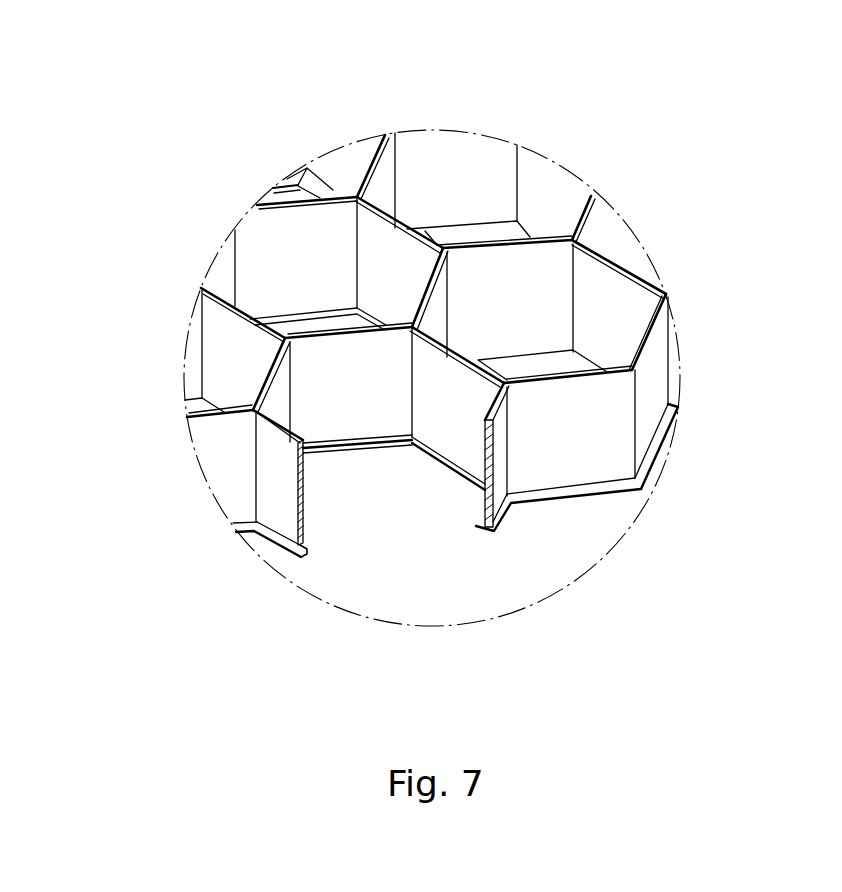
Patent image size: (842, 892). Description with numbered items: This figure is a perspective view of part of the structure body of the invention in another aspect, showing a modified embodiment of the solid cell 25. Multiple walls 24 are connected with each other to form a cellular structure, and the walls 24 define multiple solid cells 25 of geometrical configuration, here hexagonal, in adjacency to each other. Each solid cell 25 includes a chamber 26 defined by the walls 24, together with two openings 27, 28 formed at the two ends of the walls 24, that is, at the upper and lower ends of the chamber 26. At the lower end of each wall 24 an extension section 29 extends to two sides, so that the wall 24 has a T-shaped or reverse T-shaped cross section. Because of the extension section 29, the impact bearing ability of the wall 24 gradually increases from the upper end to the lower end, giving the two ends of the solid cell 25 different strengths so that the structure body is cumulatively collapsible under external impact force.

The wall 24 is at (228, 335).
The solid cell 25 is at (635, 253).
The chamber 26 is at (289, 235).
The opening 27 is at (523, 257).
The opening 28 is at (382, 510).
The extension section 29 is at (270, 545).